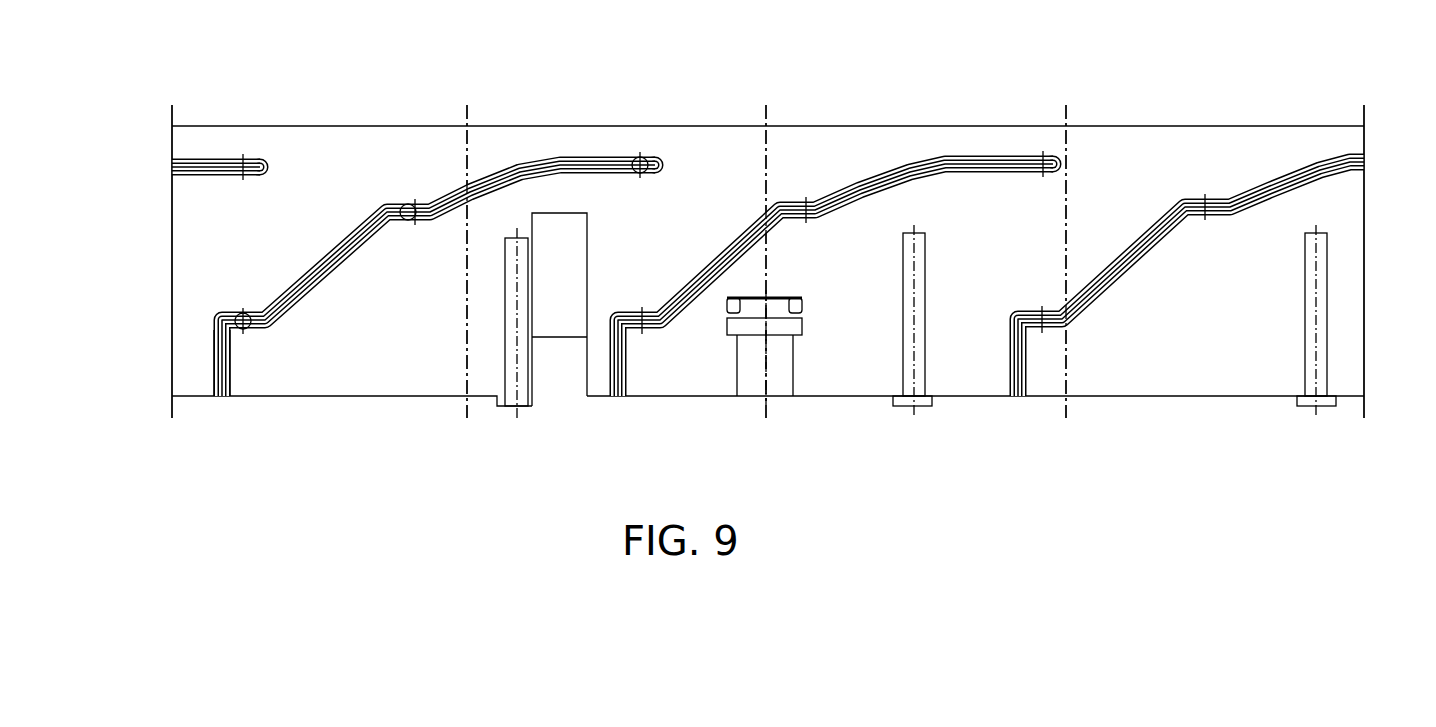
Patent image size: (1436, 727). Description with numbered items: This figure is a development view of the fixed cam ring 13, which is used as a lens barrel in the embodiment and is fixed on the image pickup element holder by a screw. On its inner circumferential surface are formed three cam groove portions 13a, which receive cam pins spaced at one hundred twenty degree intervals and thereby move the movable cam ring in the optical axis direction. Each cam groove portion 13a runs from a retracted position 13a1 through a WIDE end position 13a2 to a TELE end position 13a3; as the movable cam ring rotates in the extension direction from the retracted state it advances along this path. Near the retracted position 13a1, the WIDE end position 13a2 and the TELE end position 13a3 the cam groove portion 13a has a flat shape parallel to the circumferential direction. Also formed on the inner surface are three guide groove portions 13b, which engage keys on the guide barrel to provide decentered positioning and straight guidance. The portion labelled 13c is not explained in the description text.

The fixed cam ring 13 is at (862, 126).
The cam groove portion 13a is at (560, 156).
The retracted position 13a1 is at (242, 314).
The WIDE end position 13a2 is at (416, 208).
The TELE end position 13a3 is at (643, 170).
The guide groove portion 13b is at (505, 406).
The pipe end portion 13c is at (218, 398).